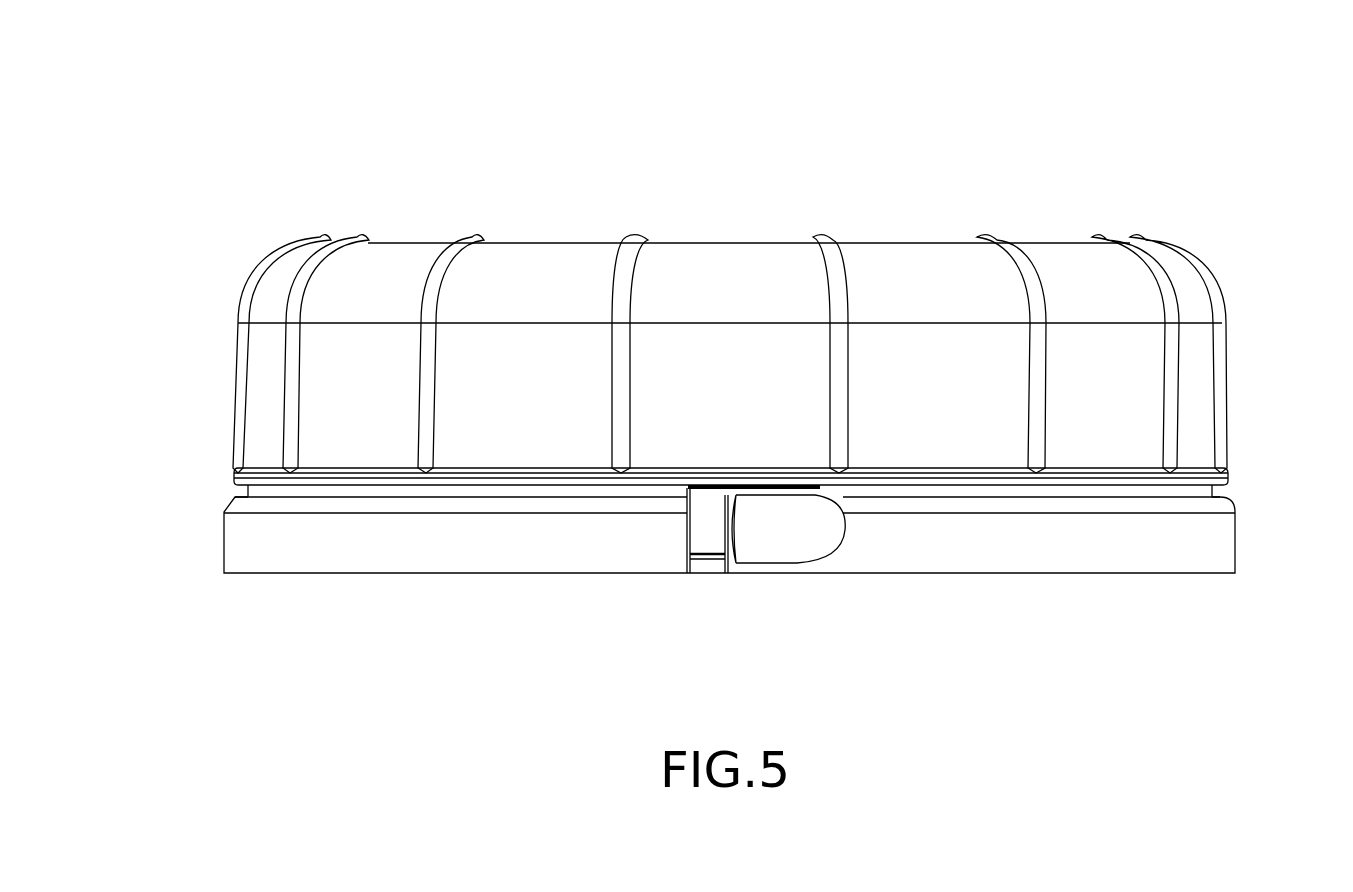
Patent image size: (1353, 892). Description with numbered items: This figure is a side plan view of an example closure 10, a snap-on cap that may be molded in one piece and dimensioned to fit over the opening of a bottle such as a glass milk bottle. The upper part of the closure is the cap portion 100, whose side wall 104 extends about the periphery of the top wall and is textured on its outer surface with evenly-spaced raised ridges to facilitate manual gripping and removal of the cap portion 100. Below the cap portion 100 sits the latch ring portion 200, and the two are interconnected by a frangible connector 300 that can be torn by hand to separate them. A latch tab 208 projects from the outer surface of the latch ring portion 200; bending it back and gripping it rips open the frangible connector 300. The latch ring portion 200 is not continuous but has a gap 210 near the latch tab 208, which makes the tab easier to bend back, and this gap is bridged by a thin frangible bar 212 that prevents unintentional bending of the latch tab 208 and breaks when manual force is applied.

The closure 10 is at (423, 157).
The cap portion 100 is at (238, 273).
The side wall 104 is at (1118, 393).
The latch ring portion 200 is at (360, 598).
The latch tab 208 is at (820, 538).
The gap 210 is at (713, 528).
The frangible bar 212 is at (718, 563).
The frangible connector 300 is at (1085, 488).